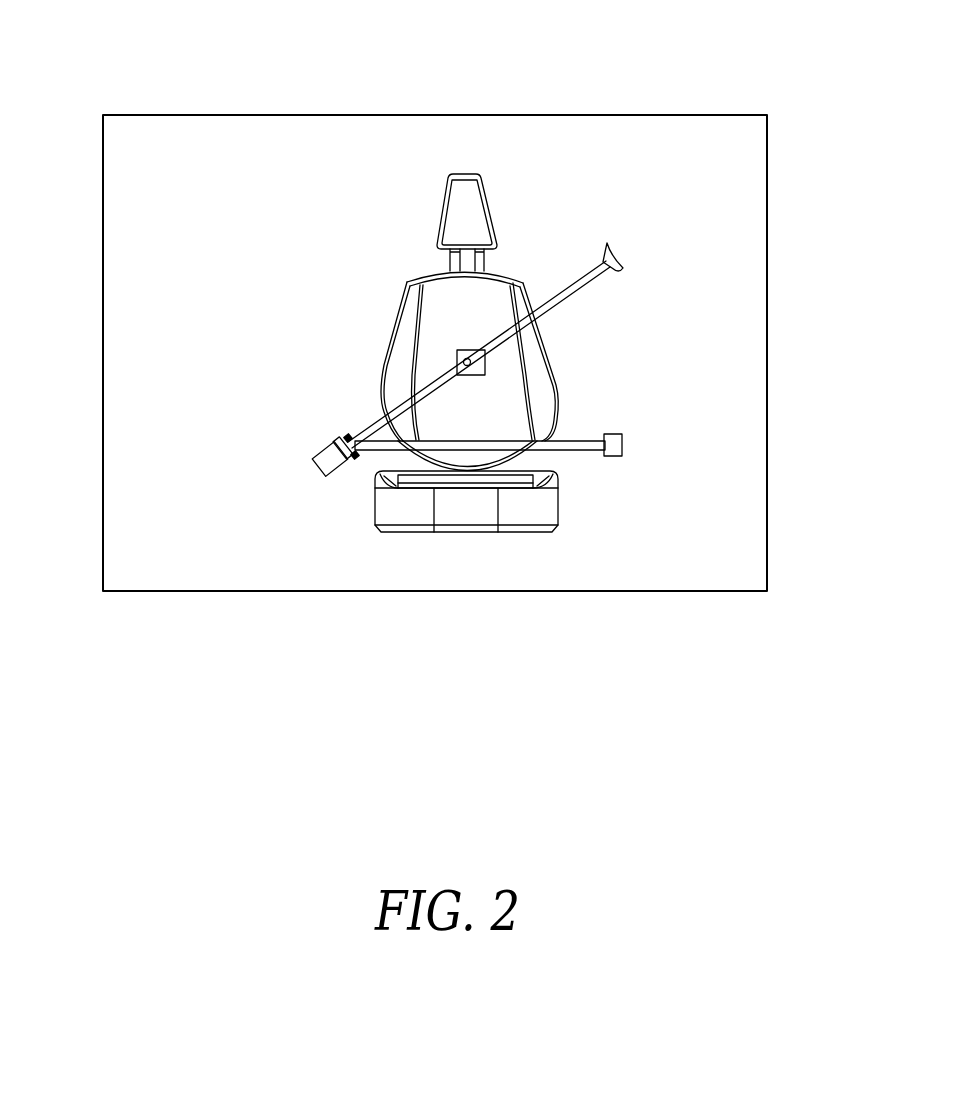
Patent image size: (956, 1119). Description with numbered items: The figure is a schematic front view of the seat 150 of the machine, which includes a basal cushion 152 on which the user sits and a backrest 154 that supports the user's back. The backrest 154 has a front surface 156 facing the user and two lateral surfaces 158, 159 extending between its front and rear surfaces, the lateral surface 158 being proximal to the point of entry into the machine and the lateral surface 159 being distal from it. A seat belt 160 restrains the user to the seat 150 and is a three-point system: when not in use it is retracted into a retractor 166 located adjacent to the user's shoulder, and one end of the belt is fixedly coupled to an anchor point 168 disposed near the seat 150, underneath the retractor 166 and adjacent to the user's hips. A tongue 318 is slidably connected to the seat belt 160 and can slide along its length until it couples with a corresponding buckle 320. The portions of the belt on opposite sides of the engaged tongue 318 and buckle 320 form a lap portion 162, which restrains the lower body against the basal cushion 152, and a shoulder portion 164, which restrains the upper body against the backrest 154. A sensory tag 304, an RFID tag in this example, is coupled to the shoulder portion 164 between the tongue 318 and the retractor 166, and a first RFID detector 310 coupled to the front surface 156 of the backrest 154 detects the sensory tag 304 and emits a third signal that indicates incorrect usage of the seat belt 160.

The seat 150 is at (427, 148).
The basal cushion 152 is at (525, 556).
The backrest 154 is at (372, 321).
The front surface 156 is at (455, 313).
The lateral surface 158 is at (560, 370).
The lateral surface 159 is at (402, 303).
The seat belt 160 is at (544, 280).
The lap portion 162 is at (582, 440).
The shoulder portion 164 is at (568, 288).
The retractor 166 is at (623, 252).
The anchor point 168 is at (622, 448).
The sensory tag 304 is at (463, 364).
The first RFID detector 310 is at (462, 356).
The tongue 318 is at (340, 440).
The buckle 320 is at (328, 458).